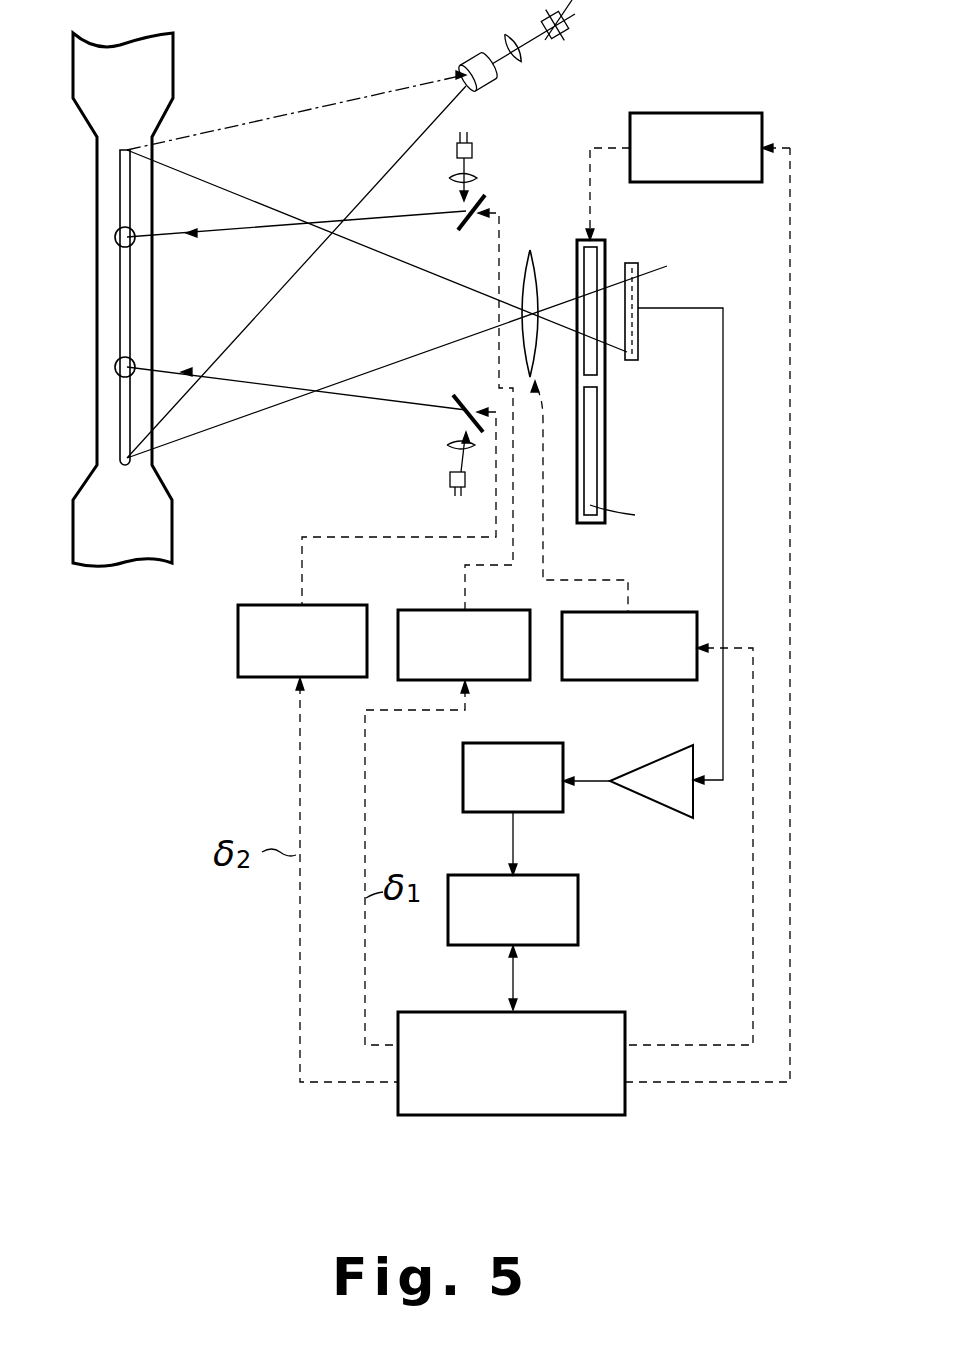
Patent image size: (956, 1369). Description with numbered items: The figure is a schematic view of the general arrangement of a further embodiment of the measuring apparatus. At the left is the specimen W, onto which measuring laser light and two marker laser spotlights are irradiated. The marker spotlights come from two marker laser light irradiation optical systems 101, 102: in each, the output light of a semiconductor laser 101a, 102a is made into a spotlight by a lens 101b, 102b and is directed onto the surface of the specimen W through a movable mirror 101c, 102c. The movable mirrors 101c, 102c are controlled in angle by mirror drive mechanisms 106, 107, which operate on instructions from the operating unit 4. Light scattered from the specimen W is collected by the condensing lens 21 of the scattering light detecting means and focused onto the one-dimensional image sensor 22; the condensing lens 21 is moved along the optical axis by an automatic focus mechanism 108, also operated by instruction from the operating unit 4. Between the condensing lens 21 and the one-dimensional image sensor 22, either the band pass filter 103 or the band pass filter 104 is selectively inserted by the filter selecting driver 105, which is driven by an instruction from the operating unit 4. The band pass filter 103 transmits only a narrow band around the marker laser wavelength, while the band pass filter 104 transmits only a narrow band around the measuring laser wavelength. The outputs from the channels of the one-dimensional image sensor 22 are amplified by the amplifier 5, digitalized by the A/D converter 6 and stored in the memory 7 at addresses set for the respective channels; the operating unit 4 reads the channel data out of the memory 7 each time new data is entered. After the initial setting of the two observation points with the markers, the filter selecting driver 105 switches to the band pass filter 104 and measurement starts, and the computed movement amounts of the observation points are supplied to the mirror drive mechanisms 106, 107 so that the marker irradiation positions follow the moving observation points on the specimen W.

The specimen W is at (160, 68).
The marker laser light irradiation optical system 101 is at (441, 167).
The semiconductor laser 101a is at (474, 144).
The lens 101b is at (477, 174).
The movable mirror 101c is at (458, 224).
The marker laser light irradiation optical system 102 is at (393, 427).
The semiconductor laser 102a is at (448, 478).
The lens 102b is at (447, 447).
The movable mirror 102c is at (462, 392).
The condensing lens 21 is at (522, 252).
The one-dimensional image sensor 22 is at (674, 518).
The band pass filter 103 is at (600, 240).
The band pass filter 104 is at (644, 522).
The filter selecting driver 105 is at (713, 113).
The mirror drive mechanism 106 is at (453, 609).
The mirror drive mechanism 107 is at (307, 606).
The automatic focus mechanism 108 is at (680, 600).
The A/D converter 6 is at (463, 790).
The amplifier 5 is at (681, 803).
The memory 7 is at (578, 920).
The operating unit 4 is at (595, 1012).